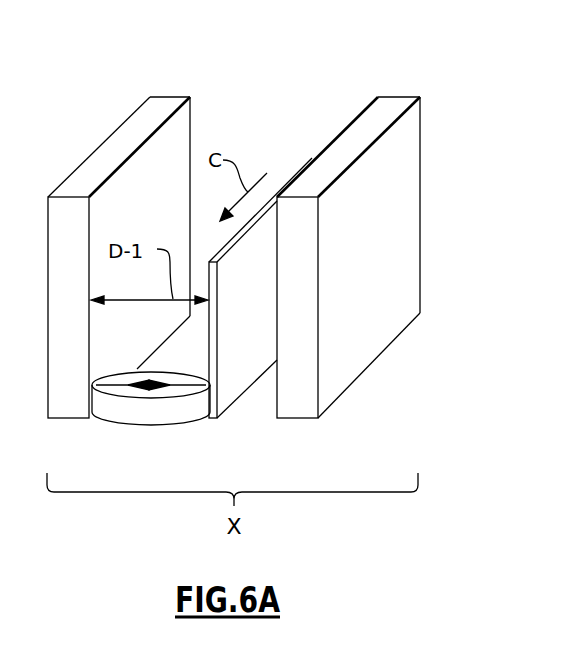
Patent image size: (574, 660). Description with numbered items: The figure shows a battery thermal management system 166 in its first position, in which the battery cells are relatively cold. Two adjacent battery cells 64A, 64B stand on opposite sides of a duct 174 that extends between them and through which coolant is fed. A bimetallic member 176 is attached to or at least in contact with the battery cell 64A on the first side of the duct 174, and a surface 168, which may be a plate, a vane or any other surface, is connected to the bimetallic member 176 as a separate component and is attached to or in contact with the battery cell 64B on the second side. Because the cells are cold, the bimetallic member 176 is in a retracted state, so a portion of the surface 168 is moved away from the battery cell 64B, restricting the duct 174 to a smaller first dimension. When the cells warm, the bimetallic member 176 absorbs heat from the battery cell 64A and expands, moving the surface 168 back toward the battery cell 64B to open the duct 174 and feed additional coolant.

The battery cell 64A is at (102, 167).
The battery cell 64B is at (404, 217).
The surface 168 is at (223, 381).
The duct 174 is at (273, 138).
The bimetallic member 176 is at (137, 410).
The battery thermal management system 166 is at (357, 36).